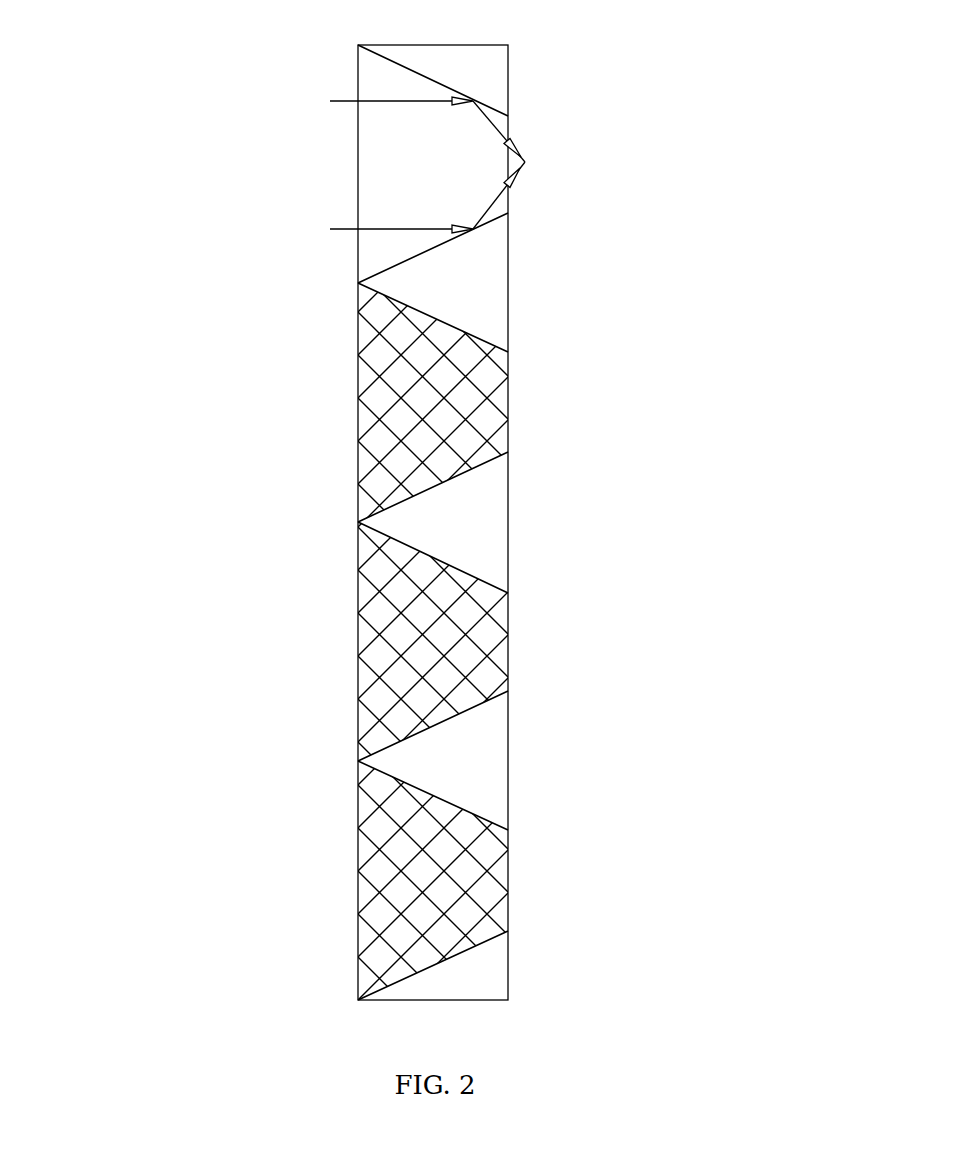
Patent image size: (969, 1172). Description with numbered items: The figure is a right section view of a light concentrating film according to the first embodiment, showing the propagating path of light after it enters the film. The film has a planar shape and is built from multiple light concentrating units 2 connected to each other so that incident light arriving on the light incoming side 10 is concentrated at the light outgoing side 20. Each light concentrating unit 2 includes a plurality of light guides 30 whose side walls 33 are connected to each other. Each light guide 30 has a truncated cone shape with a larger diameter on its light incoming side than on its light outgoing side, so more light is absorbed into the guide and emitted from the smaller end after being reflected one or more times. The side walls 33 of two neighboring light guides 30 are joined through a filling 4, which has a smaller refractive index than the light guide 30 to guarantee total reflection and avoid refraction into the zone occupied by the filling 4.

The light incoming side 10 is at (157, 216).
The light outgoing side 20 is at (713, 217).
The light concentrating unit 2 is at (189, 128).
The light guide 30 is at (412, 148).
The side wall 33 is at (453, 241).
The filling 4 is at (489, 71).